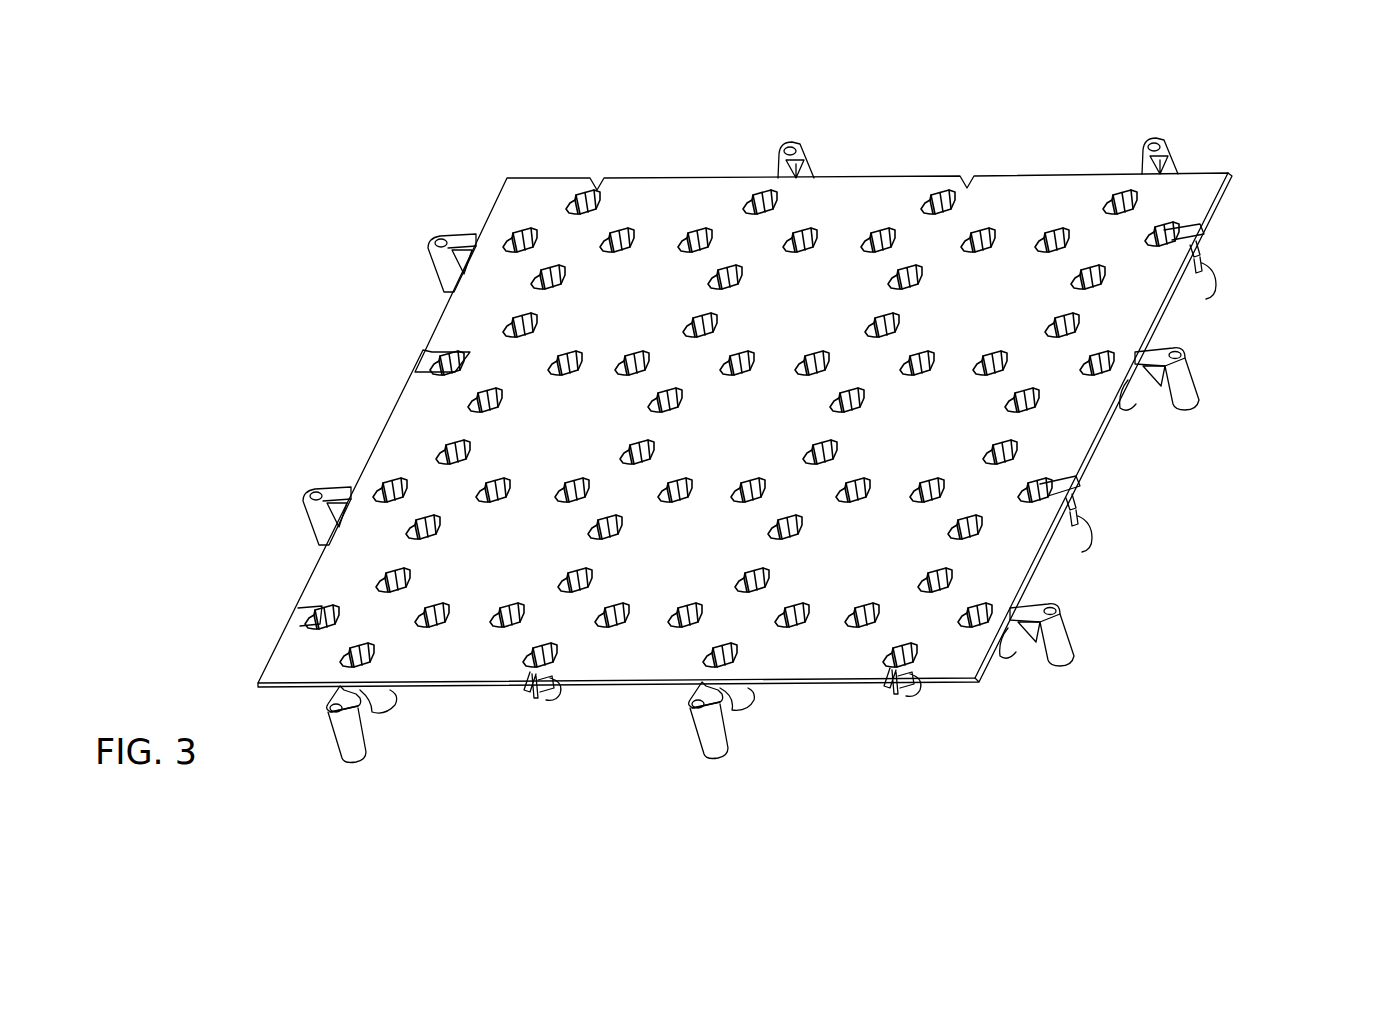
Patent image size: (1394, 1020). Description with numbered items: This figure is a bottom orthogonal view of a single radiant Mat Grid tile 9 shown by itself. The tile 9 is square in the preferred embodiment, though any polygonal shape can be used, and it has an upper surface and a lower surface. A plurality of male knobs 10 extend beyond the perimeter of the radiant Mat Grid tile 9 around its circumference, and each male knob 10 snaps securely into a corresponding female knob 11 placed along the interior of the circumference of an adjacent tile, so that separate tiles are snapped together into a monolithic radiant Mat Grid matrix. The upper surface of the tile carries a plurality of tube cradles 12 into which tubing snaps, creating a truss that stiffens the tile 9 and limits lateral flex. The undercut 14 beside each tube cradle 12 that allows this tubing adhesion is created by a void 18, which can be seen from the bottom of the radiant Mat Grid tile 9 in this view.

The radiant Mat Grid tile 9 is at (548, 178).
The male knob 10 is at (433, 238).
The female knob 11 is at (440, 356).
The tube cradle 12 is at (1148, 366).
The undercut 14 is at (1178, 205).
The void 18 is at (320, 612).